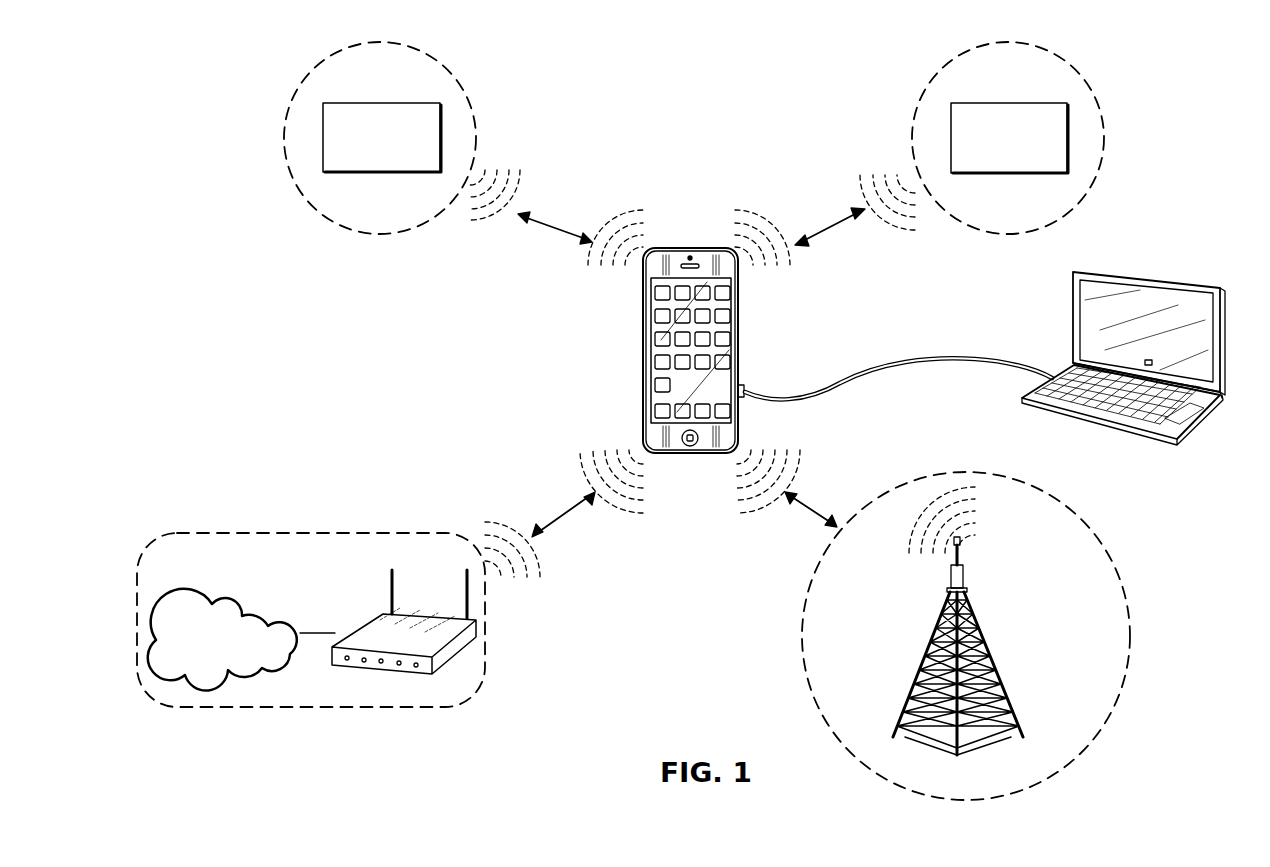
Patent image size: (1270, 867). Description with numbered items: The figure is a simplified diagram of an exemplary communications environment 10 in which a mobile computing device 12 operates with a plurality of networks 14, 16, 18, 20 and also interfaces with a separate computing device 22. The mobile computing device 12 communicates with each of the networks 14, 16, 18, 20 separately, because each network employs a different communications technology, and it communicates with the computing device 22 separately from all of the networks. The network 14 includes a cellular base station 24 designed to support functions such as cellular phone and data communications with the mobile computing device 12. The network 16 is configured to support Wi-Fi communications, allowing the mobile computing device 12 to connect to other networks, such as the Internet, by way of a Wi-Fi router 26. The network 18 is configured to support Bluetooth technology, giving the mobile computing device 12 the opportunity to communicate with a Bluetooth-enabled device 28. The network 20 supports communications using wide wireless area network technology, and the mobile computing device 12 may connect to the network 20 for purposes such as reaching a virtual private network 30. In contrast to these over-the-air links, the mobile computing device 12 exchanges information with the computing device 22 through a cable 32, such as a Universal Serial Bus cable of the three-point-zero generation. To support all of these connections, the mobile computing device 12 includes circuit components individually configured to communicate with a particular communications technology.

The communications environment 10 is at (1175, 75).
The mobile computing device 12 is at (740, 352).
The network 14 is at (1074, 509).
The network 16 is at (485, 626).
The network 18 is at (458, 78).
The network 20 is at (1098, 170).
The computing device 22 is at (1205, 284).
The cellular base station 24 is at (968, 593).
The Wi-Fi router 26 is at (452, 648).
The Bluetooth-enabled device 28 is at (440, 134).
The virtual private network (VPN) 30 is at (1067, 120).
The cable 32 is at (973, 360).